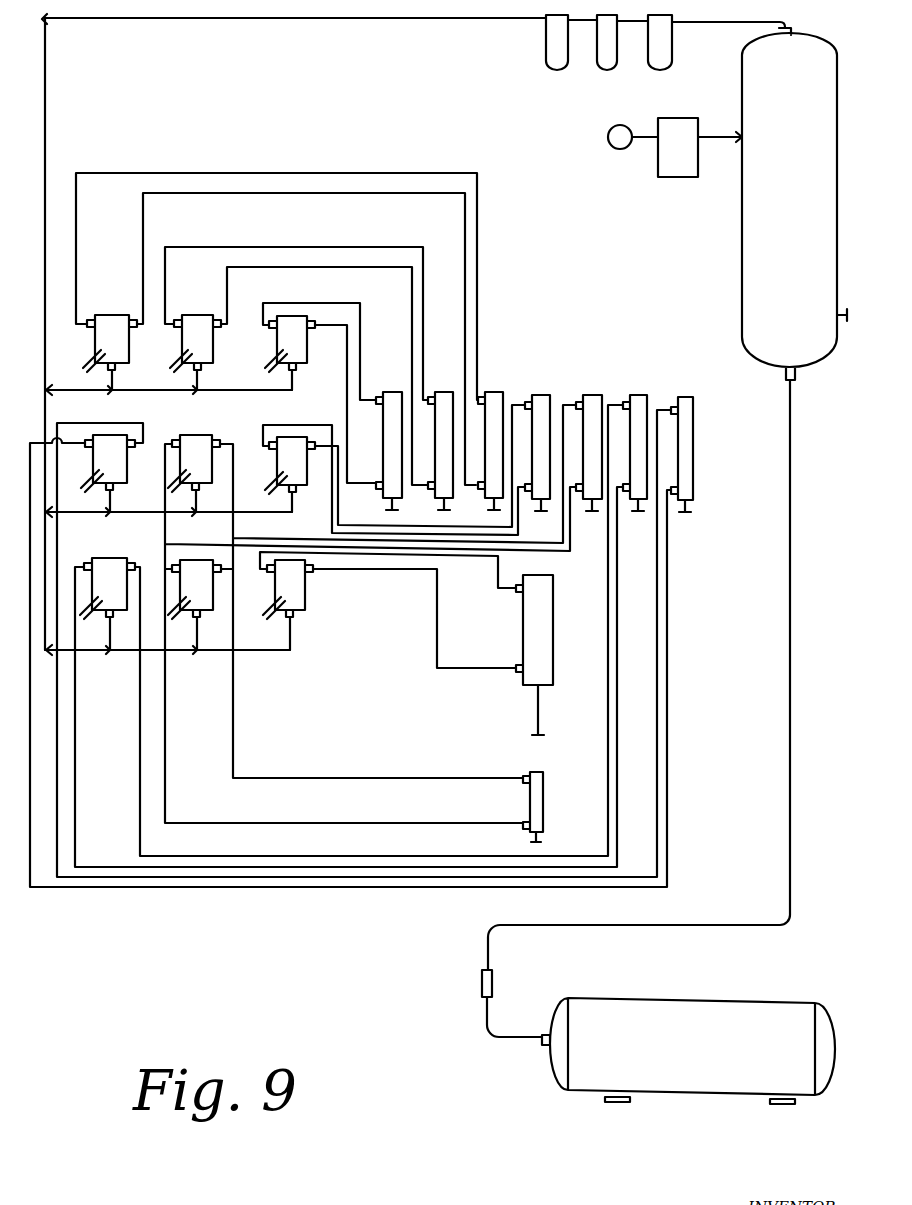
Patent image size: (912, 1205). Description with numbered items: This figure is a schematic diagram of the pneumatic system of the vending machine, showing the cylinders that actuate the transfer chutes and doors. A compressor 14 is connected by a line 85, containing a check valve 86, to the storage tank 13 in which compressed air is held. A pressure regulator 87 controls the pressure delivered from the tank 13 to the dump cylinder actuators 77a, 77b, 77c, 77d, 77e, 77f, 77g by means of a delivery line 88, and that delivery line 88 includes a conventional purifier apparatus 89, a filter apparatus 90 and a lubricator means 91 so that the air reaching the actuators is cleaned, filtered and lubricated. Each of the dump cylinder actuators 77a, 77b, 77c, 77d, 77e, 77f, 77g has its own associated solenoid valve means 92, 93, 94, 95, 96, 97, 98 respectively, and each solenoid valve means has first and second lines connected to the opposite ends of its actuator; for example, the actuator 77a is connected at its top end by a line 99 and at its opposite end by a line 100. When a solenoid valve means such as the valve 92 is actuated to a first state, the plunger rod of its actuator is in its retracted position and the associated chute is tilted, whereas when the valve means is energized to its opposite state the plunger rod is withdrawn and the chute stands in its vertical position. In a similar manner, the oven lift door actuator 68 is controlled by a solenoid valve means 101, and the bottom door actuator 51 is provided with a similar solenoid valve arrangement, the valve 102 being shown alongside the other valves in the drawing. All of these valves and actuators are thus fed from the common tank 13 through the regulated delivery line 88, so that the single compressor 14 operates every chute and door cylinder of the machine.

The storage tank 13 is at (791, 245).
The compressor 14 is at (703, 1015).
The bottom door actuator 51 is at (543, 792).
The oven lift door actuator 68 is at (540, 641).
The dump cylinder actuator 77a is at (383, 393).
The dump cylinder actuator 77b is at (437, 392).
The dump cylinder actuator 77c is at (498, 392).
The dump cylinder actuator 77d is at (544, 395).
The dump cylinder actuator 77e is at (595, 395).
The dump cylinder actuator 77f is at (639, 397).
The dump cylinder actuator 77g is at (696, 446).
The line 85 is at (792, 803).
The check valve 86 is at (492, 985).
The pressure regulator 87 is at (676, 178).
The delivery line 88 is at (244, 18).
The purifier apparatus 89 is at (657, 72).
The filter apparatus 90 is at (600, 75).
The lubricator means 91 is at (508, 63).
The solenoid valve means 92 is at (297, 352).
The solenoid valve means 93 is at (199, 349).
The solenoid valve means 94 is at (114, 348).
The solenoid valve means 95 is at (303, 465).
The solenoid valve means 96 is at (190, 443).
The solenoid valve means 97 is at (127, 545).
The solenoid valve means 98 is at (104, 454).
The line 99 is at (388, 778).
The line 100 is at (421, 823).
The solenoid valve means 101 is at (300, 596).
The solenoid valve 102 is at (208, 598).